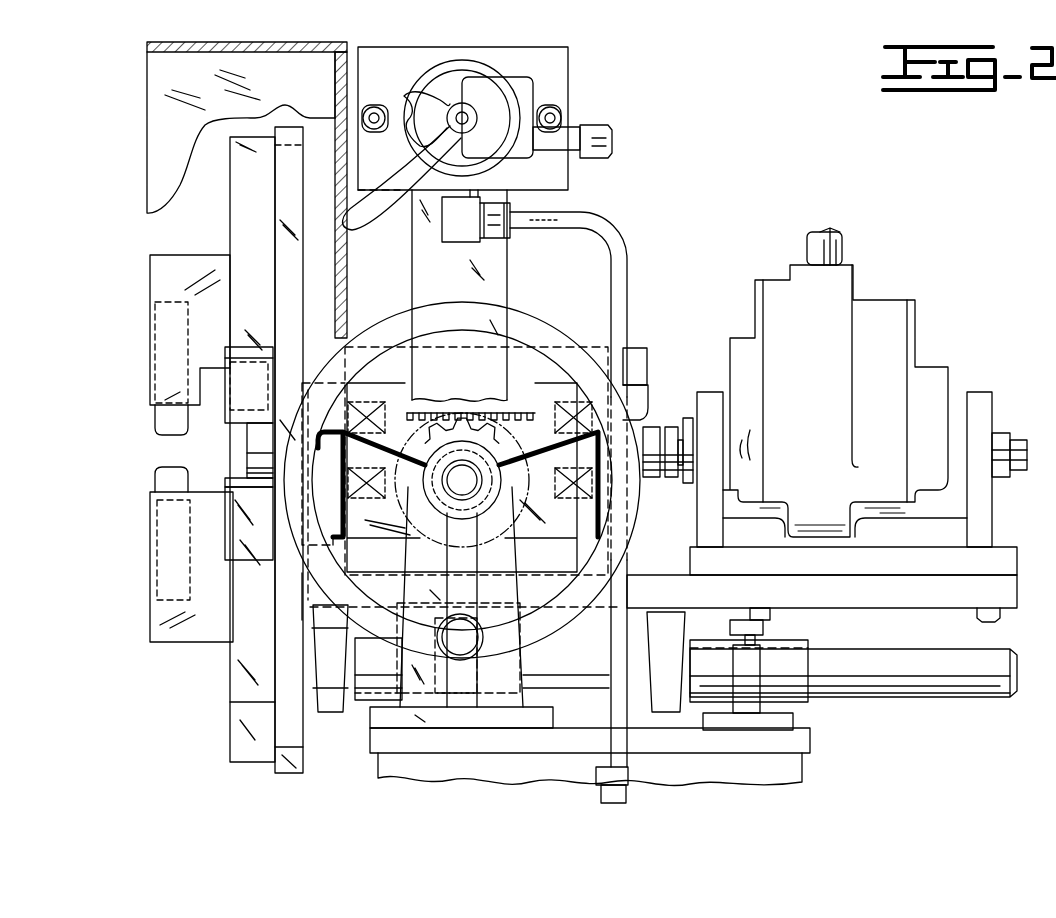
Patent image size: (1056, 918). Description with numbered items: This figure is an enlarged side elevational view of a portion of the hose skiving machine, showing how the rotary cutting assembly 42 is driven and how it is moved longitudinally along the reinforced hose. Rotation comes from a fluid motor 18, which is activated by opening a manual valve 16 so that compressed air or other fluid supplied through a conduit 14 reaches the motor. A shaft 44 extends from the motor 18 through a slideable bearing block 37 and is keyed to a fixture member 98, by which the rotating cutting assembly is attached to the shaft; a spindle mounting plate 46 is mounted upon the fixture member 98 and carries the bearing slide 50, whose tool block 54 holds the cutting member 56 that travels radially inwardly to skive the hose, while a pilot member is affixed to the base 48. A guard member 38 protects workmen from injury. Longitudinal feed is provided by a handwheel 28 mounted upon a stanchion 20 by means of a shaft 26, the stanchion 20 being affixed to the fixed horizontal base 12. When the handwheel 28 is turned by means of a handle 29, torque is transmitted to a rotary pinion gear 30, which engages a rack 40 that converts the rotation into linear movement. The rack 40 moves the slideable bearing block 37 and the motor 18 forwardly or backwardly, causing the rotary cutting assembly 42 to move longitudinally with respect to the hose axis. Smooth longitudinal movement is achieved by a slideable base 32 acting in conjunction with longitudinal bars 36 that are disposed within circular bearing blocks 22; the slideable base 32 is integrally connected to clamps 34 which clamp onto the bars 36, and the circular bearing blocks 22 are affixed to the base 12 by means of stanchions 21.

The fixed horizontal base 12 is at (756, 778).
The conduit 14 is at (612, 715).
The manual valve 16 is at (476, 91).
The fluid motor 18 is at (814, 376).
The stanchion 20 is at (464, 272).
The stanchions 21 is at (742, 663).
The circular bearing blocks 22 is at (391, 667).
The shaft 26 is at (452, 487).
The handwheel 28 is at (518, 318).
The handle 29 is at (465, 650).
The rotary pinion gear 30 is at (453, 424).
The slideable base 32 is at (960, 598).
The clamps 34 is at (340, 714).
The longitudinal bars 36 is at (990, 656).
The slideable bearing block 37 is at (572, 529).
The guard member 38 is at (302, 42).
The rack 40 is at (650, 392).
The rotary cutting assembly 42 is at (135, 107).
The shaft 44 is at (660, 480).
The spindle mounting plate 46 is at (288, 132).
The base 48 is at (250, 448).
The bearing slide 50 is at (230, 213).
The tool block 54 is at (152, 260).
The cutting member 56 is at (172, 473).
The fixture member 98 is at (340, 540).